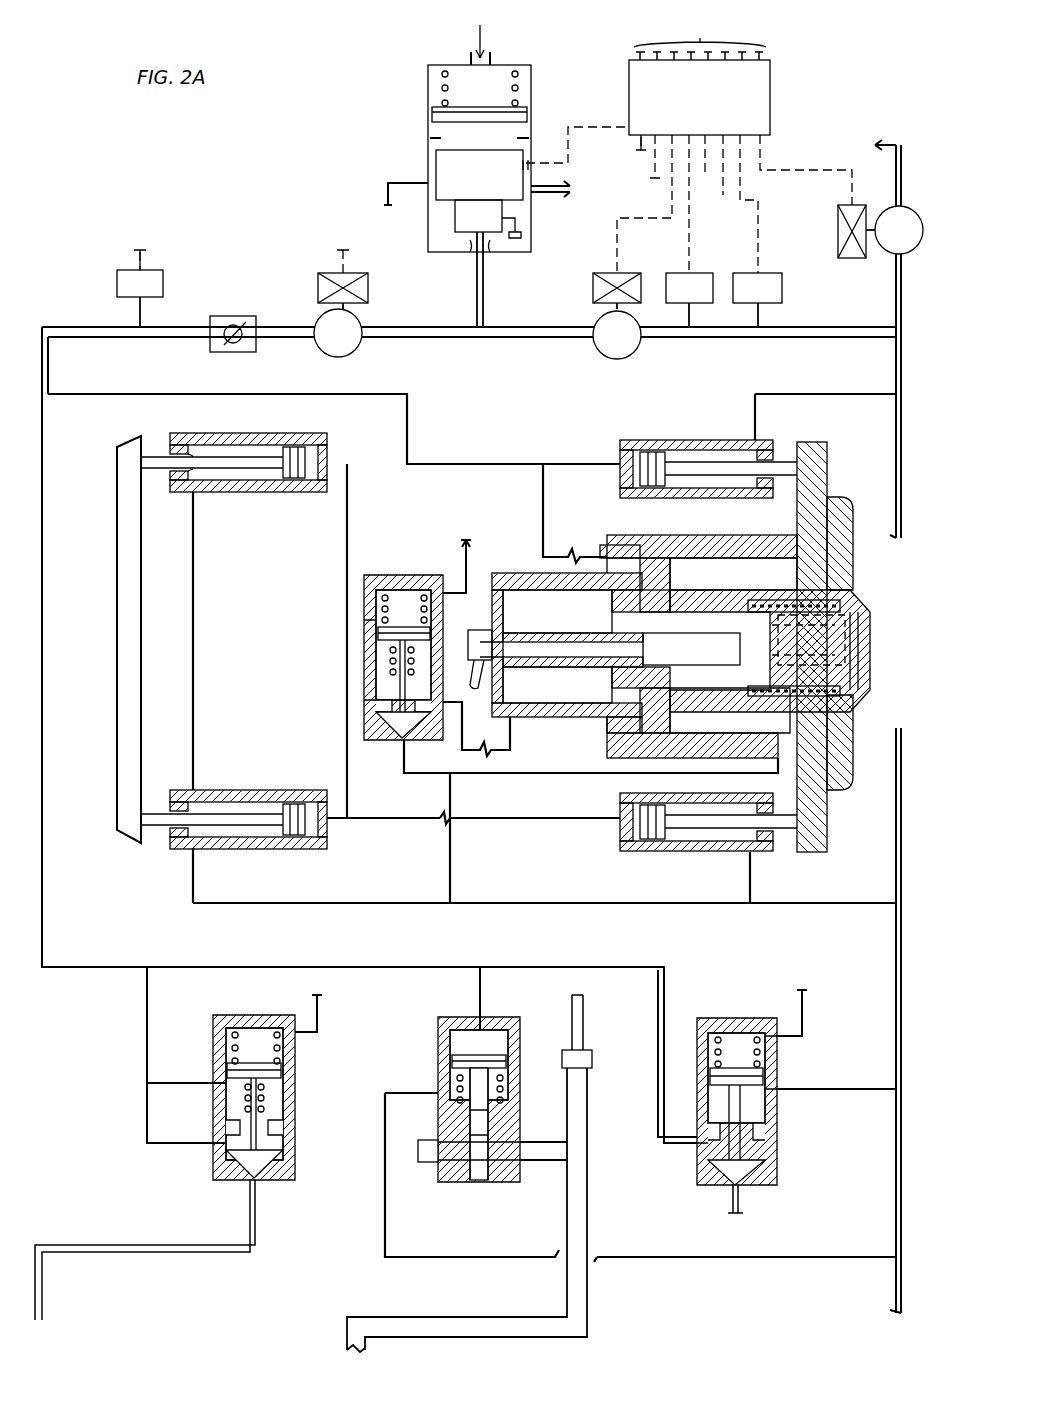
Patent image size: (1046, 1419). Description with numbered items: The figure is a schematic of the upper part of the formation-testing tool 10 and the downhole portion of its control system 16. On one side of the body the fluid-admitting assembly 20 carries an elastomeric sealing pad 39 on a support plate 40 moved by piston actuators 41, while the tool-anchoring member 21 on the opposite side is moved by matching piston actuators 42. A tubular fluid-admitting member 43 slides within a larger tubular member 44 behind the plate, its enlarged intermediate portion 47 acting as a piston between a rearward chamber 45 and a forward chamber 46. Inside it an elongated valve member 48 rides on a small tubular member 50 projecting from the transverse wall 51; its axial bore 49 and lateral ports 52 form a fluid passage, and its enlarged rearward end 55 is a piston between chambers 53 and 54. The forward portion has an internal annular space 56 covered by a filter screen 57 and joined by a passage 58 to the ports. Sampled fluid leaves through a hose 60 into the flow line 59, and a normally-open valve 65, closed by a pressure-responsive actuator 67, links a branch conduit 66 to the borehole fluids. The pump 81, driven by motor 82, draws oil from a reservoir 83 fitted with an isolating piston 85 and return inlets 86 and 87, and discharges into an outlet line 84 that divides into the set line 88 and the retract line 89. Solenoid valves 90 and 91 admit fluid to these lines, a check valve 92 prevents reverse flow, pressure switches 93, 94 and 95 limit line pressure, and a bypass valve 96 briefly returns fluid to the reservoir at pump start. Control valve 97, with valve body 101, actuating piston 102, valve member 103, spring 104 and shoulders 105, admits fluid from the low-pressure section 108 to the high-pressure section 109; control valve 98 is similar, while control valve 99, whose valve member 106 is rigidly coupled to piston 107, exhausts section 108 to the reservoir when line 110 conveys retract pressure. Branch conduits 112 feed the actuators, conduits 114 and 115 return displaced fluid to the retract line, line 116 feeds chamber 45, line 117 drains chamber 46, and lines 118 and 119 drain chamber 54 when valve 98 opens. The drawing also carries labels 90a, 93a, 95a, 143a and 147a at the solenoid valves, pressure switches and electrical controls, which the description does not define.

The formation-testing tool 10 is at (303, 222).
The tool-control system 16 is at (782, 84).
The fluid-admitting assembly 20 is at (850, 452).
The tool-anchoring member 21 is at (117, 622).
The annular sealing pad 39 is at (853, 510).
The support plate 40 is at (810, 442).
The piston actuators 41 is at (666, 440).
The piston actuators 42 is at (255, 492).
The fluid-admitting member 43 is at (850, 600).
The larger tubular member 44 is at (672, 535).
The rearward piston chamber 45 is at (615, 540).
The forward piston chamber 46 is at (733, 574).
The outwardly-enlarged intermediate portion 47 is at (660, 584).
The valve member 48 is at (820, 660).
The axial bore 49 is at (668, 665).
The small tubular member 50 is at (555, 655).
The transverse wall 51 is at (492, 575).
The lateral ports 52 is at (840, 632).
The forward piston chamber 53 is at (612, 735).
The rearward piston chamber 54 is at (557, 611).
The enlarged rearward end 55 is at (612, 608).
The internal annular space 56 is at (770, 700).
The tubular filter screen 57 is at (845, 690).
The fluid passage 58 is at (752, 603).
The flow line 59 is at (588, 1195).
The flexible conduit 60 is at (470, 675).
The normally-open control valve 65 is at (446, 1204).
The branch conduit 66 is at (545, 1175).
The pressure-responsive actuator 67 is at (430, 1029).
The pump 81 is at (455, 218).
The driving motor 82 is at (436, 158).
The reservoir 83 is at (531, 222).
The outlet line 84 is at (484, 290).
The isolating piston 85 is at (520, 107).
The reservoir return line 86 is at (885, 142).
The reservoir inlet 87 is at (390, 186).
The set line 88 is at (445, 337).
The retract line 89 is at (527, 340).
The solenoid-actuated valve 90 is at (355, 355).
The solenoid 90a is at (345, 245).
The solenoid-actuated valve 91 is at (608, 358).
The check valve 92 is at (240, 352).
The pressure switch 93 is at (163, 285).
The pressure switch lead 93a is at (148, 245).
The pressure switch 94 is at (693, 273).
The pressure switch 95 is at (760, 273).
The control leads 95a is at (712, 31).
The bypass valve 96 is at (890, 258).
The hydraulic control valve 97 is at (188, 1174).
The hydraulic control valve 98 is at (380, 761).
The hydraulic control valve 99 is at (792, 1168).
The valve body 101 is at (296, 1080).
The actuating piston 102 is at (285, 1066).
The valve member 103 is at (290, 1160).
The spring 104 is at (268, 1100).
The opposed shoulders 105 is at (280, 1150).
The valve member 106 is at (708, 1185).
The actuating piston 107 is at (766, 1068).
The low-pressure section 108 is at (45, 797).
The high-pressure section 109 is at (133, 1250).
The pressure-communicating line 110 is at (833, 1092).
The branch conduits 112 is at (410, 416).
The conduit 114 is at (545, 903).
The conduit 115 is at (758, 392).
The branch hydraulic line 116 is at (543, 490).
The branch hydraulic line 117 is at (540, 778).
The branch hydraulic line 118 is at (495, 750).
The branch hydraulic line 119 is at (413, 780).
The control lead 143a is at (722, 195).
The control lead 147a is at (705, 175).